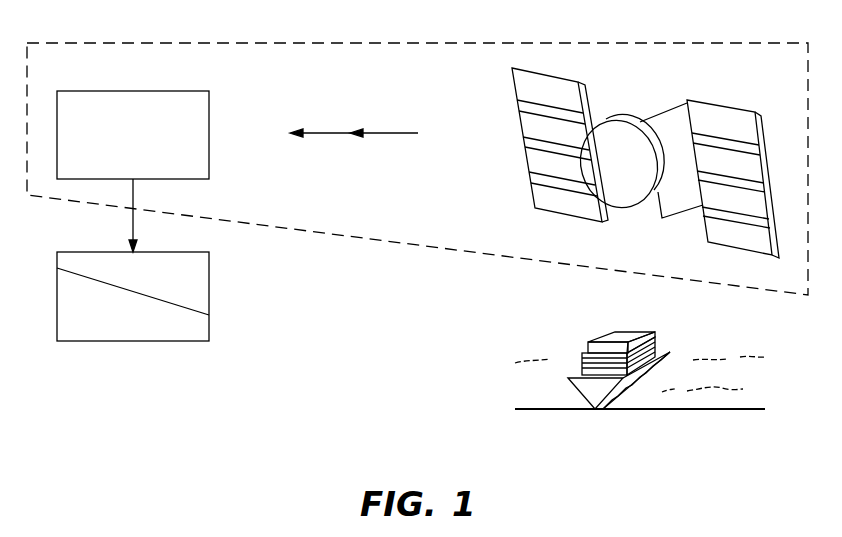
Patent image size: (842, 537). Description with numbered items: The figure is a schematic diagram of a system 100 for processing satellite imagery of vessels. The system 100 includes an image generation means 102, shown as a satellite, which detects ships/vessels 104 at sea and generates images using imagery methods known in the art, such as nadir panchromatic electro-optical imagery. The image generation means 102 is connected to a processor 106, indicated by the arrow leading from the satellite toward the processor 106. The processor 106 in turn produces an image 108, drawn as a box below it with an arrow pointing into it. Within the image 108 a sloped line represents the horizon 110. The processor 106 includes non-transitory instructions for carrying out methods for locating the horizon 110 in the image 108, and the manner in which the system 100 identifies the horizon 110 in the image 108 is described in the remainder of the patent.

The system 100 is at (409, 340).
The image generation means 102 is at (527, 154).
The ships/vessels 104 is at (577, 372).
The processor 106 is at (209, 163).
The image 108 is at (209, 305).
The horizon 110 is at (147, 293).